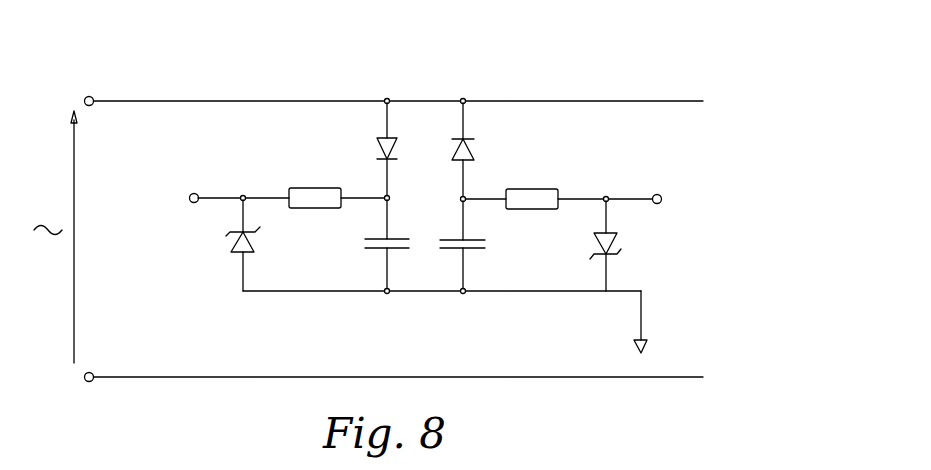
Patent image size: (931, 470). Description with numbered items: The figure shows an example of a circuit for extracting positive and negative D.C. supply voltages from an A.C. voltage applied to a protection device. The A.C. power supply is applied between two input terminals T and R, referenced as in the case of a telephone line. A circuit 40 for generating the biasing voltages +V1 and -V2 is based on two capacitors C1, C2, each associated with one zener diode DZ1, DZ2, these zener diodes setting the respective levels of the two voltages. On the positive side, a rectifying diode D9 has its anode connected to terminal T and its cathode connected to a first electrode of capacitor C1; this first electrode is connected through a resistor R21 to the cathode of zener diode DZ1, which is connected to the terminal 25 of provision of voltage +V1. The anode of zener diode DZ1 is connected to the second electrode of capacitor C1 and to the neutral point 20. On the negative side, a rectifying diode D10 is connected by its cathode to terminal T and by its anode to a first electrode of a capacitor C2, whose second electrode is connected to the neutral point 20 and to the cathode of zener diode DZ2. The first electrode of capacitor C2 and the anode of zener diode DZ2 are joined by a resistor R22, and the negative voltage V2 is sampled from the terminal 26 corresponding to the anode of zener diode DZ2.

The input terminal T is at (90, 96).
The input terminal R is at (90, 382).
The terminal of provision of voltage +V1 25 is at (192, 193).
The terminal 26 is at (660, 194).
The neutral point 20 is at (648, 350).
The circuit for generating biasing voltages 40 is at (192, 300).
The rectifying diode D9 is at (371, 149).
The rectifying diode D10 is at (486, 150).
The resistor R21 is at (315, 185).
The resistor R22 is at (532, 187).
The capacitor C1 is at (379, 245).
The capacitor C2 is at (469, 246).
The zener diode DZ1 is at (223, 245).
The zener diode DZ2 is at (630, 246).